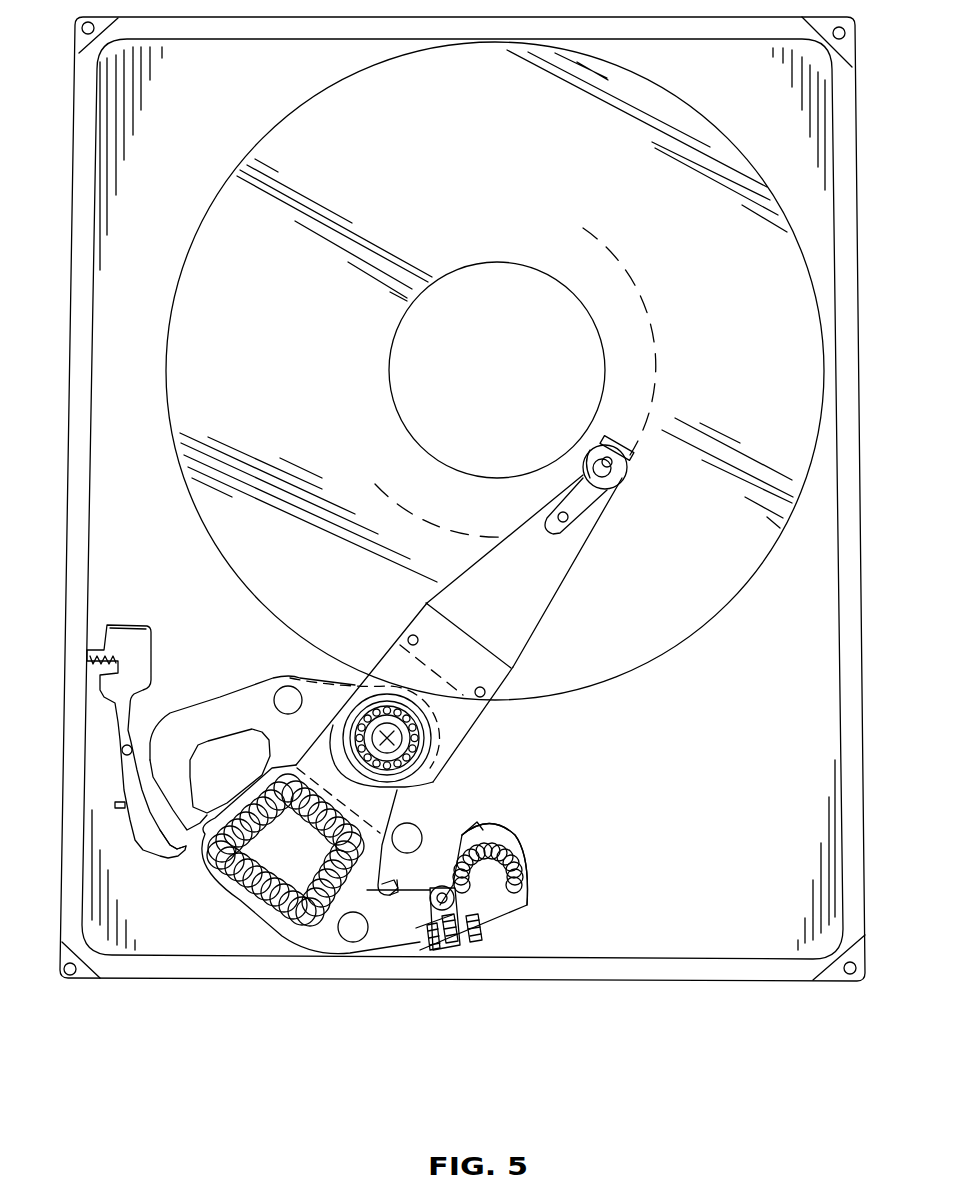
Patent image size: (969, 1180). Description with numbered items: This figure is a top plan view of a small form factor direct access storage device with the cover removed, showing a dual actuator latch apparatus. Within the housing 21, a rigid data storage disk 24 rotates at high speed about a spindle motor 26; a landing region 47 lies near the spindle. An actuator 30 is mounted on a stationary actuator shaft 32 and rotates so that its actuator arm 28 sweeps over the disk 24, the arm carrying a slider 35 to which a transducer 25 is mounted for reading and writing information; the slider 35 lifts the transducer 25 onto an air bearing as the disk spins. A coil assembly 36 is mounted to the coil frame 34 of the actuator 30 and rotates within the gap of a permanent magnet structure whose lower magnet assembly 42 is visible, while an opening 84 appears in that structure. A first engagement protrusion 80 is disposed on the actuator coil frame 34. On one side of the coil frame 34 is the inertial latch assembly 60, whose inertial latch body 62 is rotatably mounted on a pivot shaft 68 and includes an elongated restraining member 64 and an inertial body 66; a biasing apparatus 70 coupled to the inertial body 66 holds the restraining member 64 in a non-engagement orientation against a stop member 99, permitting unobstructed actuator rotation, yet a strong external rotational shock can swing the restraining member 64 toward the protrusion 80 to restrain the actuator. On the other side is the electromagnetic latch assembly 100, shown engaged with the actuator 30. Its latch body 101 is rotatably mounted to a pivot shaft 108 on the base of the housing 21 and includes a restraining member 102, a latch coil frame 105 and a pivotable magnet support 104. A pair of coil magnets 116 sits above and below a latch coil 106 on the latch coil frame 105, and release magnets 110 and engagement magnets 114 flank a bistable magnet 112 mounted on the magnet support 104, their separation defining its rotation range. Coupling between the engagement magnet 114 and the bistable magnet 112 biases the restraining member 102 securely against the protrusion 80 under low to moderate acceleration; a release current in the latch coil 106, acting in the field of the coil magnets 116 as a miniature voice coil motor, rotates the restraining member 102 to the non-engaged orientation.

The housing 21 is at (752, 957).
The data storage disk 24 is at (470, 168).
The spindle motor 26 is at (394, 336).
The landing zone 47 is at (610, 320).
The slider 35 is at (617, 442).
The transducer 25 is at (632, 462).
The actuator arm 28 is at (537, 633).
The actuator 30 is at (457, 747).
The actuator shaft 32 is at (387, 723).
The coil assembly 36 is at (286, 927).
The coil frame 34 is at (397, 836).
The first engagement protrusion 80 is at (381, 889).
The lower magnet assembly 42 is at (231, 732).
The opening 84 is at (185, 807).
The inertial latch body 62 is at (132, 725).
The inertial body 66 is at (125, 633).
The biasing apparatus 70 is at (88, 652).
The restraining member 64 is at (176, 857).
The pivot shaft 68 is at (122, 749).
The stop member 99 is at (115, 804).
The inertial latch assembly 60 is at (56, 806).
The electromagnetic latch assembly 100 is at (433, 868).
The latch coil 106 is at (523, 878).
The coil magnets 116 is at (470, 835).
The latch coil frame 105 is at (473, 873).
The pivot shaft 108 is at (457, 900).
The latch body 101 is at (390, 908).
The restraining member 102 is at (372, 907).
The pivotable magnet support 104 is at (410, 932).
The release magnets 110 is at (450, 908).
The bistable magnet 112 is at (450, 947).
The engagement magnets 114 is at (425, 935).